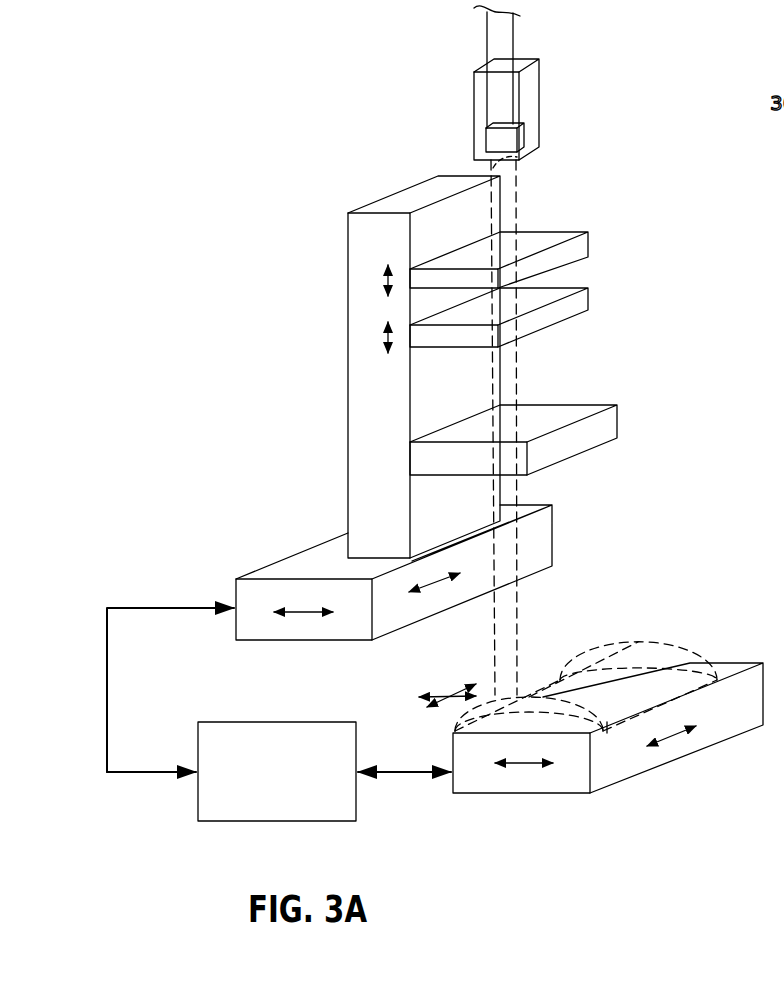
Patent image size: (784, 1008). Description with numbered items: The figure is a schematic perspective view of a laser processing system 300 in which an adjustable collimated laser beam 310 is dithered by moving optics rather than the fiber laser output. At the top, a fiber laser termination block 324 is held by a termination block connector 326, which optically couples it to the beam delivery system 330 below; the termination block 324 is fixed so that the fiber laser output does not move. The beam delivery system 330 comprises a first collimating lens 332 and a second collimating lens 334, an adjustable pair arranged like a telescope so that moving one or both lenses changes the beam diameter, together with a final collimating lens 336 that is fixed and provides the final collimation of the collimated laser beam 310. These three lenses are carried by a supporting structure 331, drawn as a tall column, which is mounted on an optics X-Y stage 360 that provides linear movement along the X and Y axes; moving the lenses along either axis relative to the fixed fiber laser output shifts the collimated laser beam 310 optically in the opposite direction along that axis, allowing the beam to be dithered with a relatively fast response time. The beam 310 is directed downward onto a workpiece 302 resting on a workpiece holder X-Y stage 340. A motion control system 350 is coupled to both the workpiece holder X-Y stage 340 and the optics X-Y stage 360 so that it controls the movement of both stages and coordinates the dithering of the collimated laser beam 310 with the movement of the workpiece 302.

The laser processing system 300 is at (284, 205).
The workpiece 302 is at (650, 642).
The adjustable collimated laser beam 310 is at (513, 638).
The fiber laser termination block 324 is at (486, 137).
The termination block connector 326 is at (474, 88).
The beam delivery system 330 is at (638, 443).
The supporting structure 331 is at (363, 355).
The first collimating lens 332 is at (548, 245).
The second collimating lens 334 is at (560, 317).
The final collimating lens 336 is at (585, 445).
The workpiece holder X-Y stage 340 is at (747, 725).
The motion control system 350 is at (205, 792).
The optics X-Y stage 360 is at (283, 563).